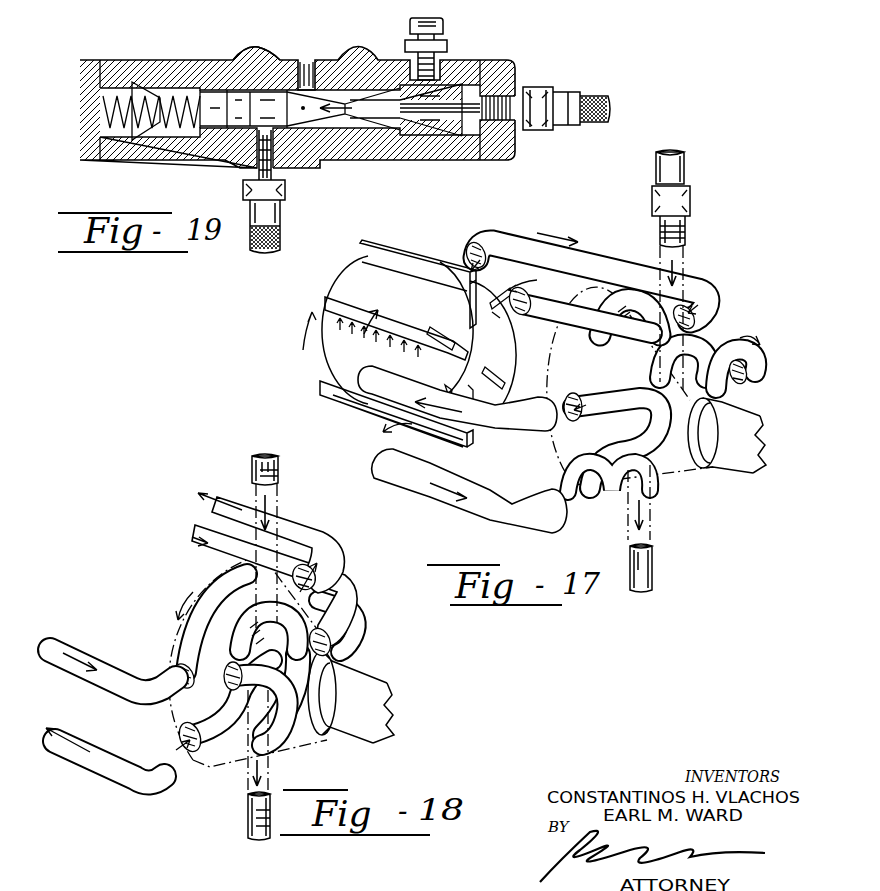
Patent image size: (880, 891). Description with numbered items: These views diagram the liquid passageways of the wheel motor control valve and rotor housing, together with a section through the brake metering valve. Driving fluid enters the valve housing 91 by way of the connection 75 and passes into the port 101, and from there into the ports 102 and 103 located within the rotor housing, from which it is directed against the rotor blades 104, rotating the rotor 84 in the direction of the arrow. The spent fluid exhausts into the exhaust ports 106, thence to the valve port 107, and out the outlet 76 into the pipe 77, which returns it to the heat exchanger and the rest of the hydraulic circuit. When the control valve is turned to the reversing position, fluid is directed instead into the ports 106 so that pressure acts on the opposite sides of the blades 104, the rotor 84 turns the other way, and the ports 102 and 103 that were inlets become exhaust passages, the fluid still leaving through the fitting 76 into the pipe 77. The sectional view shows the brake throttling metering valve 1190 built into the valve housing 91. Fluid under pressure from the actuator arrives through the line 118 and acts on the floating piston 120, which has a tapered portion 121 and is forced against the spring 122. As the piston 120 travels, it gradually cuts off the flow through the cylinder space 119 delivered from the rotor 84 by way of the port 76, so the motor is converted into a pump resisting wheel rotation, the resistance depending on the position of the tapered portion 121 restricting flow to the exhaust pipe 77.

In FIG. 19, the brake throttling metering valve 1190 is at (516, 47).
In FIG. 19, the spring 122 is at (151, 94).
In FIG. 19, the tapered portion 121 is at (326, 88).
In FIG. 19, the cylinder space 119 is at (288, 126).
In FIG. 19, the line 118 is at (598, 90).
In FIG. 19, the floating piston 120 is at (372, 110).
In FIG. 19, the outlet 76 is at (306, 70).
In FIG. 17, the outlet 76 is at (648, 566).
In FIG. 18, the outlet 76 is at (247, 805).
In FIG. 19, the valve housing 91 is at (256, 44).
In FIG. 19, the pipe 77 is at (280, 236).
In FIG. 17, the rotor 84 is at (330, 352).
In FIG. 17, the rotor blades 104 is at (380, 305).
In FIG. 17, the exhaust ports 106 is at (703, 290).
In FIG. 18, the exhaust ports 106 is at (317, 545).
In FIG. 17, the port 102 is at (522, 430).
In FIG. 18, the port 102 is at (141, 678).
In FIG. 17, the valve port 107 is at (614, 316).
In FIG. 18, the valve port 107 is at (207, 614).
In FIG. 17, the port 101 is at (684, 358).
In FIG. 18, the port 101 is at (290, 615).
In FIG. 17, the port 103 is at (740, 360).
In FIG. 18, the port 103 is at (351, 613).
In FIG. 17, the connection 75 is at (688, 170).
In FIG. 18, the connection 75 is at (278, 456).